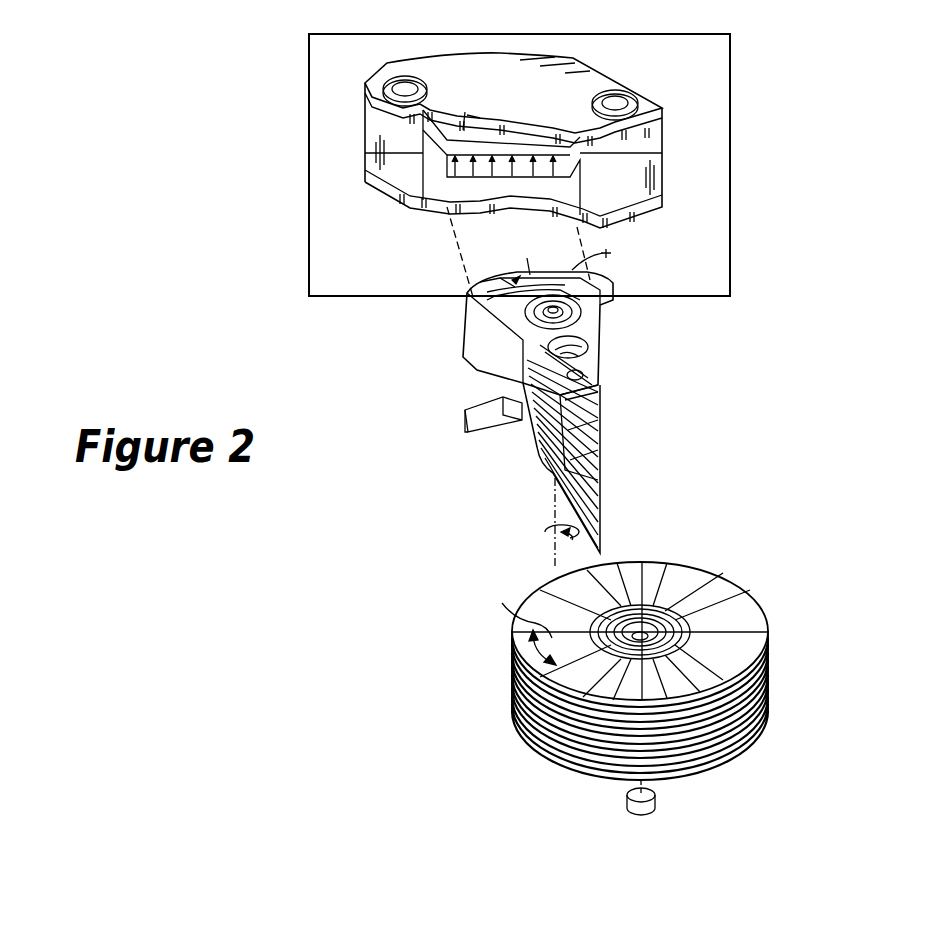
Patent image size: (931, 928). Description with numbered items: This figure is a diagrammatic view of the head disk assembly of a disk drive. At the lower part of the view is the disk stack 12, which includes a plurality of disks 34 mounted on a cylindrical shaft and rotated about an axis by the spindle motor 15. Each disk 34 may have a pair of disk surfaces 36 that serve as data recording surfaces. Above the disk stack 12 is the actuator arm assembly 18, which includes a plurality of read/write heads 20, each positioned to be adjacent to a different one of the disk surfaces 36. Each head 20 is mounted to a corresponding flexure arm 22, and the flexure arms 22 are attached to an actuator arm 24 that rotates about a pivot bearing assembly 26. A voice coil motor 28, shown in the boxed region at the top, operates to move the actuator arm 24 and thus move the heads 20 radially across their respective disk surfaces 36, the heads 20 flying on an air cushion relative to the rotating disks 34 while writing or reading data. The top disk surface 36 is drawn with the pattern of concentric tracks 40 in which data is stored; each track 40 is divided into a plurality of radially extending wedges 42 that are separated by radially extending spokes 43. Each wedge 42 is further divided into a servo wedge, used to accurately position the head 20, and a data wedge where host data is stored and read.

The disk stack 12 is at (528, 566).
The spindle motor 15 is at (627, 804).
The actuator arm assembly 18 is at (702, 365).
The read/write head 20 is at (602, 453).
The flexure arm 22 is at (593, 413).
The actuator arm 24 is at (597, 357).
The pivot bearing assembly 26 is at (583, 312).
The voice coil motor 28 is at (730, 153).
The disk 34 is at (657, 755).
The disk surface 36 is at (753, 640).
The track 40 is at (658, 603).
The wedge 42 is at (520, 658).
The spoke 43 is at (516, 612).